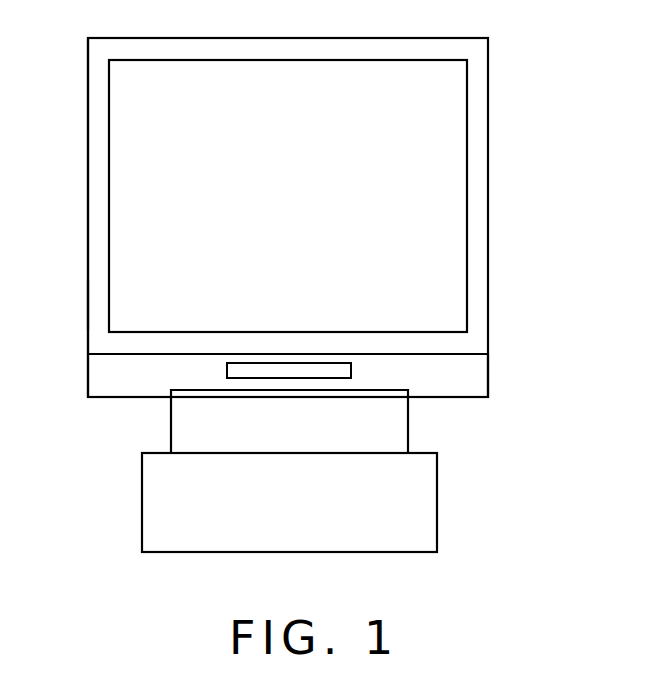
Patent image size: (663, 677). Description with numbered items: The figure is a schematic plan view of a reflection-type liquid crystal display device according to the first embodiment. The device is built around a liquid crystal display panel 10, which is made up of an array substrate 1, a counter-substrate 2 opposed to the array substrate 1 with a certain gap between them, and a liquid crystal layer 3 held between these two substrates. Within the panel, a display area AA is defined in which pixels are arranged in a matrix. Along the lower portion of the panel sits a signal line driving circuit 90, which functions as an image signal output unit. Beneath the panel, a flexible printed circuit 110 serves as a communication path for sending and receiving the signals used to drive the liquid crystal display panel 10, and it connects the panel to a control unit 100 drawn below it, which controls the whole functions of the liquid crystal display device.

The liquid crystal display panel 10 is at (508, 223).
The array substrate 1 is at (95, 372).
The counter-substrate 2 is at (93, 243).
The liquid crystal layer 3 is at (88, 305).
The display area AA is at (469, 132).
The signal line driving circuit 90 is at (226, 366).
The flexible printed circuit 110 is at (410, 428).
The control unit 100 is at (439, 510).